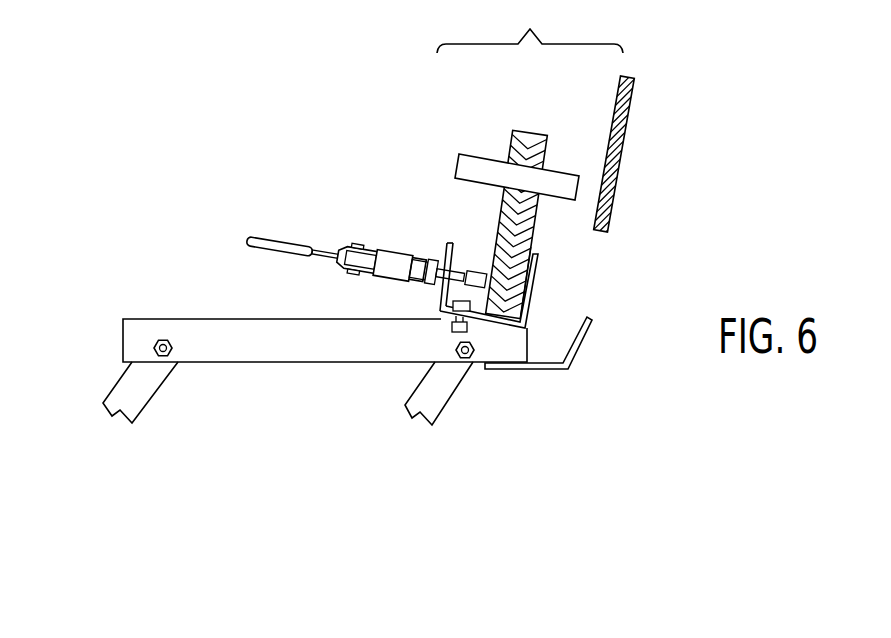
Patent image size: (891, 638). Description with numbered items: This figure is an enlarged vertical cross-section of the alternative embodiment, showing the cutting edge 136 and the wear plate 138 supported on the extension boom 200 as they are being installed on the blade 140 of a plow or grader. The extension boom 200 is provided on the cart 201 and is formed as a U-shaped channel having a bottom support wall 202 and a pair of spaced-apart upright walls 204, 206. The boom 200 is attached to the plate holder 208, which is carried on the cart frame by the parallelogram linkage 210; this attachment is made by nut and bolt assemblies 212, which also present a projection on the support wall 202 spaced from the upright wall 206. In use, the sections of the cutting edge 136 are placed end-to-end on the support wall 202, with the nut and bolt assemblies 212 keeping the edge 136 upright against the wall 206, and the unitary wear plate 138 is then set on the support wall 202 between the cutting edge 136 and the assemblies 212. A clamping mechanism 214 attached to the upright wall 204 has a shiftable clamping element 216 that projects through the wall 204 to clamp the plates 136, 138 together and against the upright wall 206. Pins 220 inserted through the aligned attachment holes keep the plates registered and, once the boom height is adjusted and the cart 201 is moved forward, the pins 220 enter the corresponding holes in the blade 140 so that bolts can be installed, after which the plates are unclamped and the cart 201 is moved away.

The cutting edge 136 is at (547, 133).
The wear plate 138 is at (527, 131).
The blade 140 is at (630, 105).
The extension boom 200 is at (540, 280).
The cart 201 is at (144, 314).
The bottom support wall 202 is at (474, 326).
The upright wall 204 is at (448, 246).
The upright wall 206 is at (530, 258).
The plate holder 208 is at (530, 311).
The parallelogram linkage 210 is at (150, 400).
The nut and bolt assemblies 212 is at (450, 323).
The clamping mechanism 214 is at (367, 251).
The shiftable clamping element 216 is at (466, 266).
The pin 220 is at (470, 165).